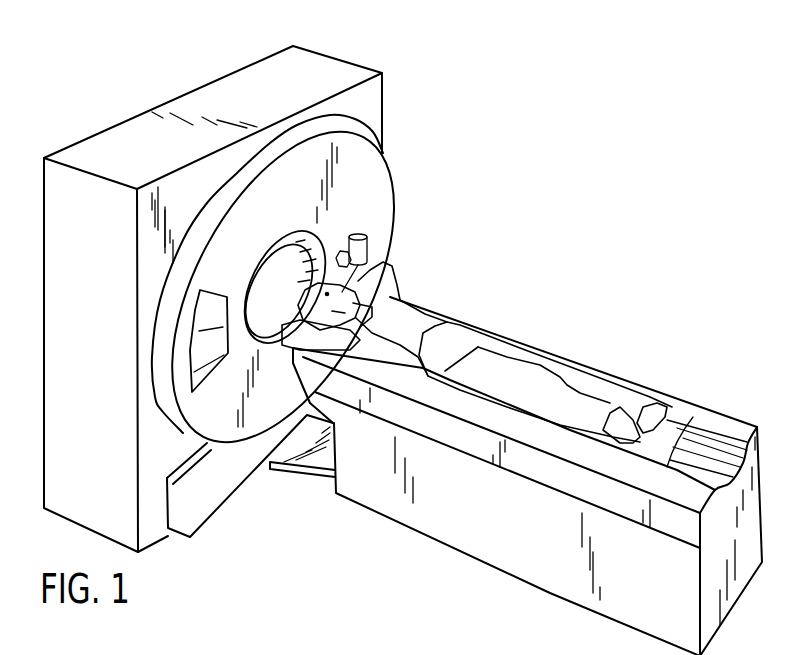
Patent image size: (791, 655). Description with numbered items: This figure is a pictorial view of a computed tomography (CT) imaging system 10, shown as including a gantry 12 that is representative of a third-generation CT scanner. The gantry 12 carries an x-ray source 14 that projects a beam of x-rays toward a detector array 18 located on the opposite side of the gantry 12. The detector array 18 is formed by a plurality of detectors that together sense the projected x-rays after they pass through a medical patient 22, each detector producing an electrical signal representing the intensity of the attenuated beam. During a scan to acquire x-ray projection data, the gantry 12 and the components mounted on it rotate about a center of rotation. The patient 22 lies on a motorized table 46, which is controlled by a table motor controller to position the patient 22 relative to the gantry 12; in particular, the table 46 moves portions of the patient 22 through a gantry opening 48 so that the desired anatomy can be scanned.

The computed tomography (CT) imaging system 10 is at (497, 183).
The gantry 12 is at (375, 205).
The x-ray source 14 is at (367, 247).
The detector array 18 is at (206, 365).
The medical patient 22 is at (421, 320).
The motorized table 46 is at (510, 558).
The gantry opening 48 is at (282, 278).